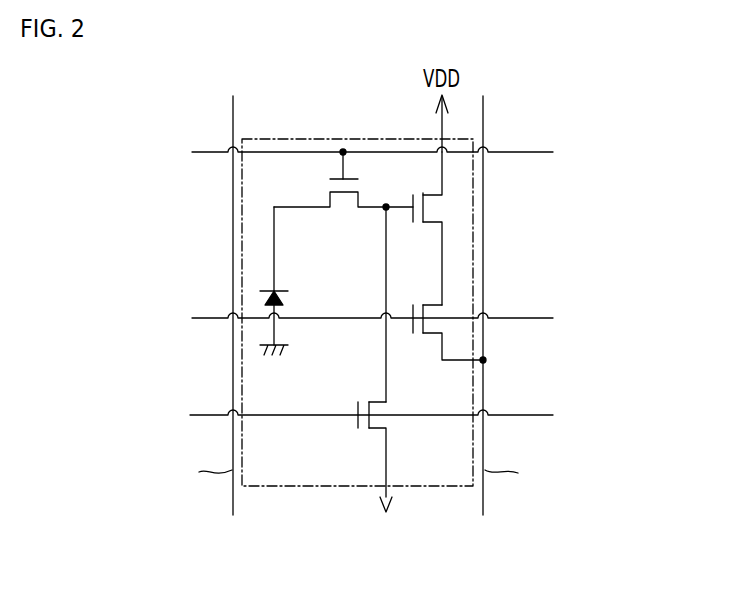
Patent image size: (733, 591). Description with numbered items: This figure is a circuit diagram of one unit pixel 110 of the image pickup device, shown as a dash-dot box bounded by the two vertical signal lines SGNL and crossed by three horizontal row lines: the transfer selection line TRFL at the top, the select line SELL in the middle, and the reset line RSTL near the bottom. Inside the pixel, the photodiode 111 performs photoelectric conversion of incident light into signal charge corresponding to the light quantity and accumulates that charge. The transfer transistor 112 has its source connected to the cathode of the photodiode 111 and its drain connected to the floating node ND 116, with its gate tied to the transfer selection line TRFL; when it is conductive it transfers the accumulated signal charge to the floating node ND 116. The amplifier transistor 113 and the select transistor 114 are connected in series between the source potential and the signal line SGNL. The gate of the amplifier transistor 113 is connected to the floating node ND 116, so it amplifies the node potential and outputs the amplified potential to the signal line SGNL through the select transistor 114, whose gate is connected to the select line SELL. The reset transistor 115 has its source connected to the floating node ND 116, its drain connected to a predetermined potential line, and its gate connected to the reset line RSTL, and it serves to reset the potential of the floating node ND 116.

The unit pixel 110 is at (442, 487).
The photodiode 111 is at (256, 300).
The transfer transistor 112 is at (339, 214).
The amplifier transistor 113 is at (447, 212).
The select transistor 114 is at (450, 310).
The reset transistor 115 is at (392, 425).
The floating node ND 116 is at (383, 200).
The transfer selection line TRFL is at (402, 153).
The select line SELL is at (402, 319).
The reset line RSTL is at (401, 416).
The signal line SGNL is at (357, 305).